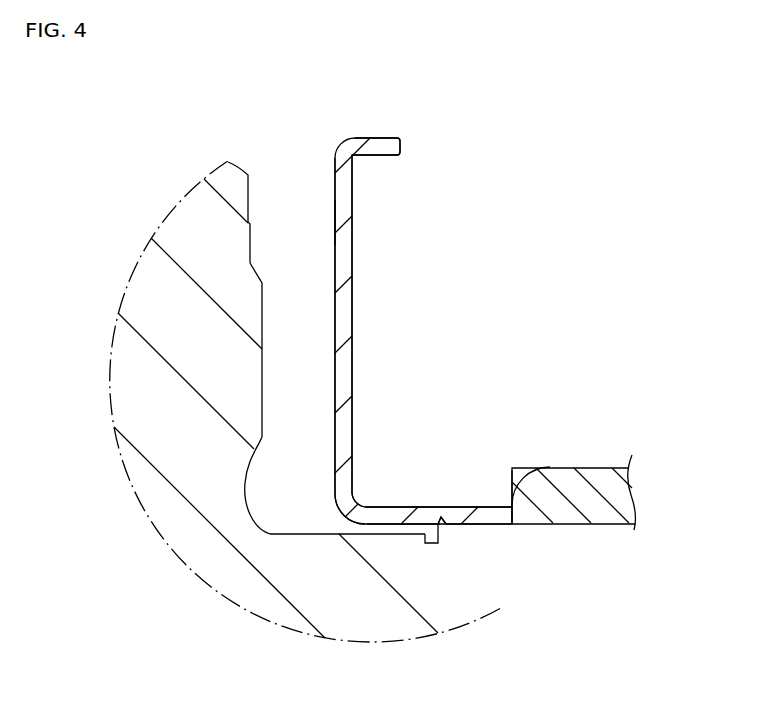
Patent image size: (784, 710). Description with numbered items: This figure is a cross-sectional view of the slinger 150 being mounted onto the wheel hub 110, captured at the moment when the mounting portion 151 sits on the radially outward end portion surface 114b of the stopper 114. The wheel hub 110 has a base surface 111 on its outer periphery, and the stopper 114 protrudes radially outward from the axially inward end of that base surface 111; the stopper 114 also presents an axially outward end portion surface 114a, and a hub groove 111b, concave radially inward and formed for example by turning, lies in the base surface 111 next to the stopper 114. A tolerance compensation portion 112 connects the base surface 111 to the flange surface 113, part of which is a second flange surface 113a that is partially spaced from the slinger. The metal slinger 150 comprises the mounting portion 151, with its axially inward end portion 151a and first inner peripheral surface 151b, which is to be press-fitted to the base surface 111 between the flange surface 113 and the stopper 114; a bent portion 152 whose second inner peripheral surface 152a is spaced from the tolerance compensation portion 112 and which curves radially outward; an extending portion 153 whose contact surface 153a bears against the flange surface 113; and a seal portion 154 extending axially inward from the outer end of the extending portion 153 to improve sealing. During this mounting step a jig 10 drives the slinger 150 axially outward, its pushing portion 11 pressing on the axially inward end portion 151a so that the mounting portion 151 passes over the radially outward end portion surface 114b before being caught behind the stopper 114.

The jig 10 is at (603, 477).
The pushing portion 11 is at (511, 487).
The wheel hub 110 is at (223, 187).
The base surface 111 is at (317, 534).
The hub groove 111b is at (428, 540).
The tolerance compensation portion 112 is at (250, 490).
The flange surface 113 is at (260, 313).
The second flange surface 113a is at (252, 217).
The stopper 114 is at (447, 528).
The axially outward end portion surface 114a is at (432, 542).
The radially outward end portion surface 114b is at (465, 525).
The slinger 150 is at (387, 340).
The mounting portion 151 is at (463, 507).
The axially inward end portion 151a is at (548, 468).
The first inner peripheral surface 151b is at (438, 522).
The bent portion 152 is at (373, 482).
The second inner peripheral surface 152a is at (403, 522).
The extending portion 153 is at (345, 265).
The contact surface 153a is at (348, 236).
The seal portion 154 is at (383, 145).